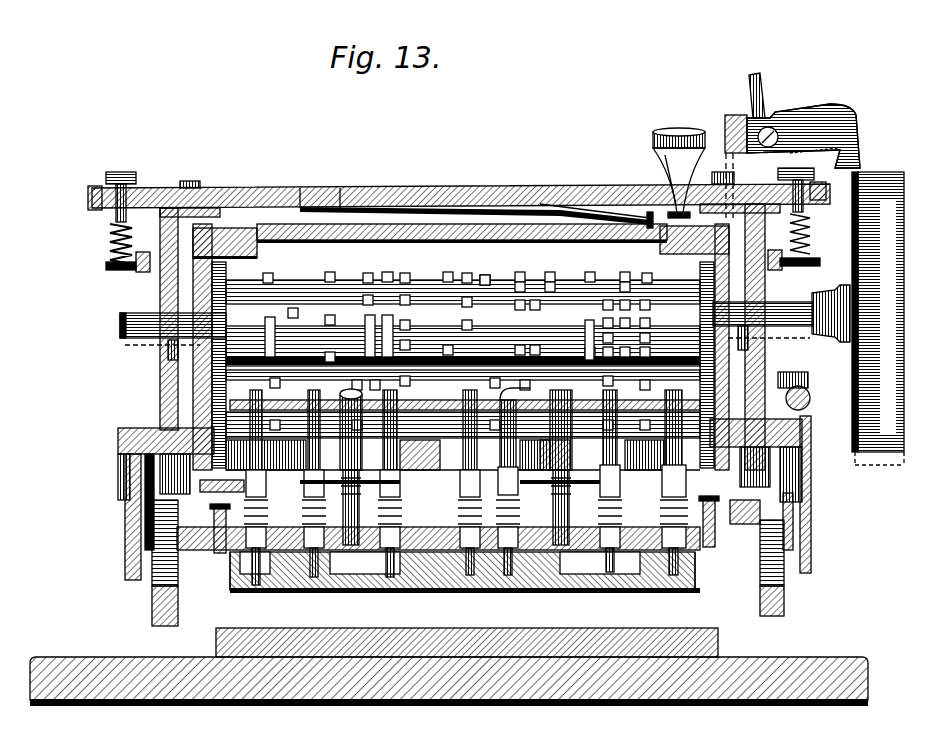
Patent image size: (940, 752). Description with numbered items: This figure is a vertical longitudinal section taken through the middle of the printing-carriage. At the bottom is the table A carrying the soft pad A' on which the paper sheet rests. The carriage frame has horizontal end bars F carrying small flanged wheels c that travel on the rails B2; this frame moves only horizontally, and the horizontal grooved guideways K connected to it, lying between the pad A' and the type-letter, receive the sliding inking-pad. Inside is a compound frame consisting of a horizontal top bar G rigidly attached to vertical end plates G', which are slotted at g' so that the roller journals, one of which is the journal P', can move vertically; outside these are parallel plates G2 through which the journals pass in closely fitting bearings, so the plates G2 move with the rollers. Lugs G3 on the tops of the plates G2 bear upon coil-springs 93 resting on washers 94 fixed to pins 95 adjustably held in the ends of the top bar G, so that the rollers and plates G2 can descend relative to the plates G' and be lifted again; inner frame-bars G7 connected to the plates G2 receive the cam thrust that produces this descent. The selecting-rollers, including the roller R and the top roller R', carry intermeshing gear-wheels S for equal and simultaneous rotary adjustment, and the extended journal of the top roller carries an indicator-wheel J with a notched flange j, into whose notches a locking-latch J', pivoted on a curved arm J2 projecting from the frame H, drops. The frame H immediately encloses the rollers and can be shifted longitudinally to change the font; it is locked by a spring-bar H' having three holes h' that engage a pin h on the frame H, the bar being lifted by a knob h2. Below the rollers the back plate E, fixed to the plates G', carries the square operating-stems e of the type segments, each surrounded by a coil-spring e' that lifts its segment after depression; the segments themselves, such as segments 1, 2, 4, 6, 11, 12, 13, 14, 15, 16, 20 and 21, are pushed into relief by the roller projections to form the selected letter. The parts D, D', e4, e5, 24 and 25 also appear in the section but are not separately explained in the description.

The base A is at (449, 681).
The pad A' is at (463, 641).
The top bar G is at (461, 188).
The vertical end plate G' is at (448, 384).
The vertical plate G2 is at (160, 312).
The lug G3 is at (88, 208).
The inner frame-bar G7 is at (400, 474).
The pin 95 is at (122, 172).
The coil-spring 93 is at (110, 240).
The washer 94 is at (116, 270).
The frame H is at (128, 398).
The spring-bar H' is at (462, 211).
The pin h is at (475, 235).
The hole h' is at (637, 193).
The knob h2 is at (655, 134).
The indicator-wheel J is at (888, 318).
The locking-latch J' is at (803, 119).
The curved arm J2 is at (724, 124).
The notched flange j is at (840, 300).
The gear-wheel S is at (226, 268).
The selecting-roller R is at (465, 394).
The top selecting-roller R' is at (463, 358).
The roller journal P' is at (450, 327).
The vertical slot g' is at (463, 353).
The roller D is at (810, 398).
The roller support D' is at (808, 376).
The flanged wheel c is at (118, 444).
The rail B2 is at (125, 520).
The end bar F is at (148, 525).
The grooved guideway K is at (152, 584).
The back plate E is at (230, 562).
The operating-stem e is at (466, 426).
The coil-spring e' is at (466, 525).
The pin part e4 is at (419, 449).
The pin e5 is at (636, 456).
The type segment 1 is at (218, 582).
The type segment 2 is at (372, 595).
The type segment 4 is at (625, 580).
The type segment 6 is at (505, 609).
The type segment 11 is at (261, 613).
The type segment 12 is at (335, 609).
The type segment 13 is at (391, 609).
The type segment 14 is at (487, 608).
The type segment 15 is at (475, 607).
The type segment 16 is at (599, 605).
The type segment 20 is at (704, 586).
The type segment 21 is at (605, 623).
The part 24 is at (225, 615).
The part 25 is at (475, 612).